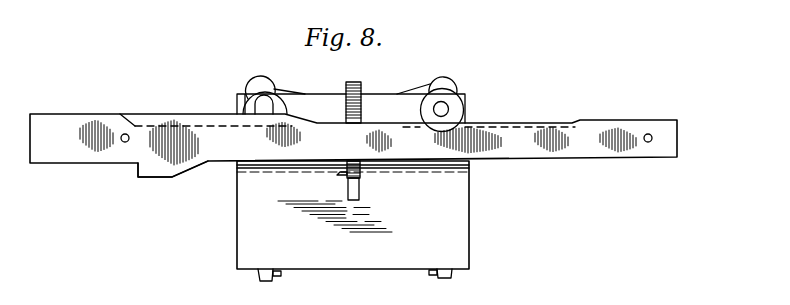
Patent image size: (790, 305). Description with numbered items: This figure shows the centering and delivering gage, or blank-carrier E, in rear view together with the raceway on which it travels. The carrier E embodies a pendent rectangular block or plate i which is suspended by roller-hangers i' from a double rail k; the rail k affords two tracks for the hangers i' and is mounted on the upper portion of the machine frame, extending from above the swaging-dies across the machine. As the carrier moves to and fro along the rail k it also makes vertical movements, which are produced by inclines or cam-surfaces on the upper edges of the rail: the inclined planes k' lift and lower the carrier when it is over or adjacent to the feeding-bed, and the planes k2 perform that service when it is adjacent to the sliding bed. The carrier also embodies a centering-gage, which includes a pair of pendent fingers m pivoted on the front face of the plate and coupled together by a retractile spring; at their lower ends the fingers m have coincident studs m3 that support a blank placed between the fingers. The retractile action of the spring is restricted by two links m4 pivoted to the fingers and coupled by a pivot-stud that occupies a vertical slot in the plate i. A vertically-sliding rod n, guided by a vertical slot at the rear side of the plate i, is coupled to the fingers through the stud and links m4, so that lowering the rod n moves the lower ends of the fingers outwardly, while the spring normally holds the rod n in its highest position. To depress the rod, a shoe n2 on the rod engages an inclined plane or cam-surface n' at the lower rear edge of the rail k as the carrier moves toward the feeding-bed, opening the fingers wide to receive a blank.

The double rail k is at (353, 145).
The inclined planes k' is at (292, 110).
The inclined planes k2 is at (497, 113).
The vertically-sliding rod n is at (353, 93).
The inclined plane or cam-surface n' is at (173, 163).
The shoe n2 is at (362, 179).
The carrier block or plate i is at (353, 198).
The roller-hangers i' is at (345, 105).
The pendent fingers m is at (354, 283).
The studs m3 is at (355, 279).
The links m4 is at (351, 84).
The blank-carrier E is at (220, 192).